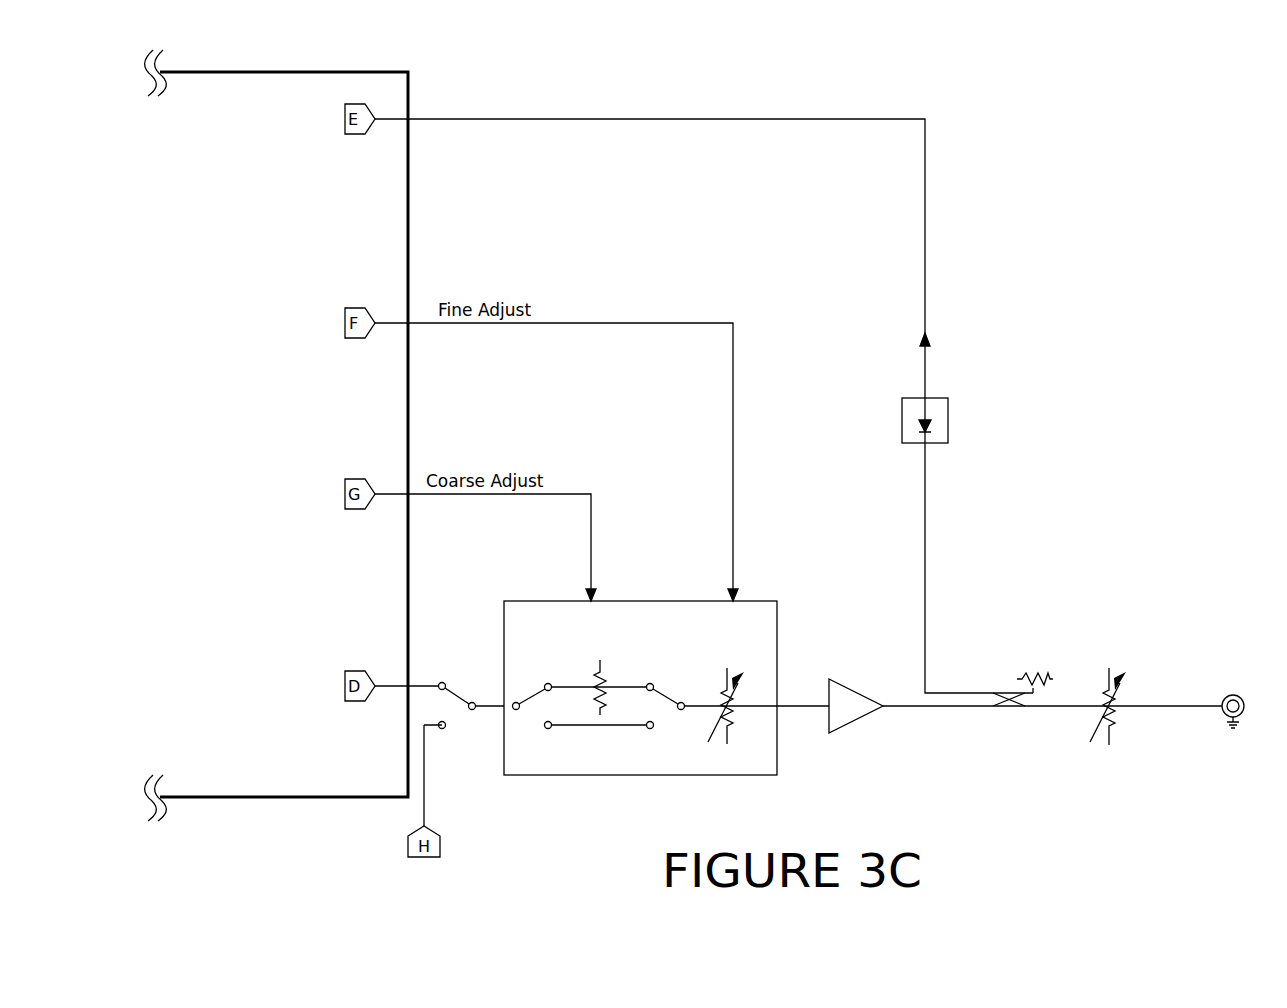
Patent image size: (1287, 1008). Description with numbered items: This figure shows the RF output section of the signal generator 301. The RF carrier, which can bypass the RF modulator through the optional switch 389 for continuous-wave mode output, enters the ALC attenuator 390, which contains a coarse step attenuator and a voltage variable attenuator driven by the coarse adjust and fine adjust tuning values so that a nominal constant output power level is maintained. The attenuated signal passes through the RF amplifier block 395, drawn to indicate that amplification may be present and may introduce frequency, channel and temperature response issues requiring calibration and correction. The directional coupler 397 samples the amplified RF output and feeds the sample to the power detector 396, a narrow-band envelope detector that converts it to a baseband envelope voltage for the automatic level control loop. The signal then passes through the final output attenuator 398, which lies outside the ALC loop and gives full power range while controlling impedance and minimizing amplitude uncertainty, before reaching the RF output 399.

The signal generator 301 is at (399, 786).
The switch 389 is at (452, 712).
The ALC attenuator 390 is at (621, 601).
The RF amplifier block 395 is at (878, 675).
The power detector 396 is at (976, 416).
The directional coupler 397 is at (1046, 678).
The final output attenuator 398 is at (1126, 670).
The RF output 399 is at (1267, 680).